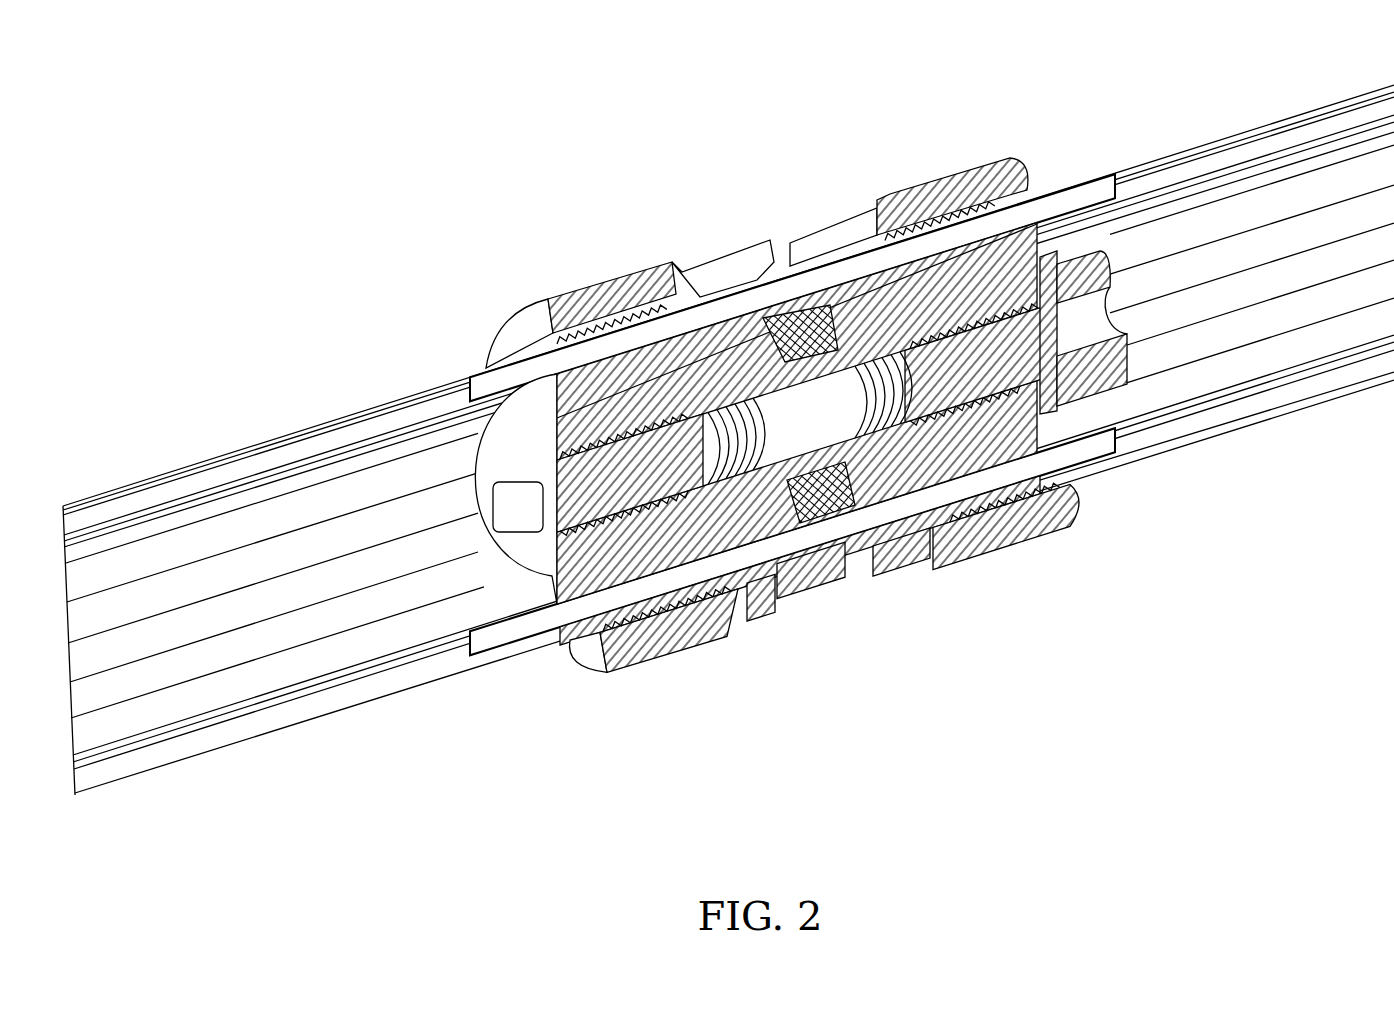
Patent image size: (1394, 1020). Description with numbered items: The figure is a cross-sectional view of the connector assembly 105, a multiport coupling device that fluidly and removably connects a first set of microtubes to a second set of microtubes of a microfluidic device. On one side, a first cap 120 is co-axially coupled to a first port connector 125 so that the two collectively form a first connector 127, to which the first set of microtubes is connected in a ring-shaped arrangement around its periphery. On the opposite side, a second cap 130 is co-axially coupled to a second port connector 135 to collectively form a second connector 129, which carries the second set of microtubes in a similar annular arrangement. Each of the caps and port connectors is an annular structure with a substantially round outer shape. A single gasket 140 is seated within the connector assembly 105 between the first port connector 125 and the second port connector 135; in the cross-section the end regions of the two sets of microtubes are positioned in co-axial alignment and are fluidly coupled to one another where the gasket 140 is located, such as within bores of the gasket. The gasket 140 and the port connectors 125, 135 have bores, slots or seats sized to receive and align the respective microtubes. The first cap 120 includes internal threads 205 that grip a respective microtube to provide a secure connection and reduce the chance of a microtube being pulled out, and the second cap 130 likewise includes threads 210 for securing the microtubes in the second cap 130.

The connector assembly 105 is at (626, 101).
The first cap 120 is at (660, 662).
The first port connector 125 is at (782, 590).
The first connector 127 is at (711, 674).
The second connector 129 is at (900, 124).
The second cap 130 is at (1055, 530).
The second port connector 135 is at (900, 555).
The gasket 140 is at (781, 333).
The internal threads 205 is at (592, 312).
The threads 210 is at (1043, 185).